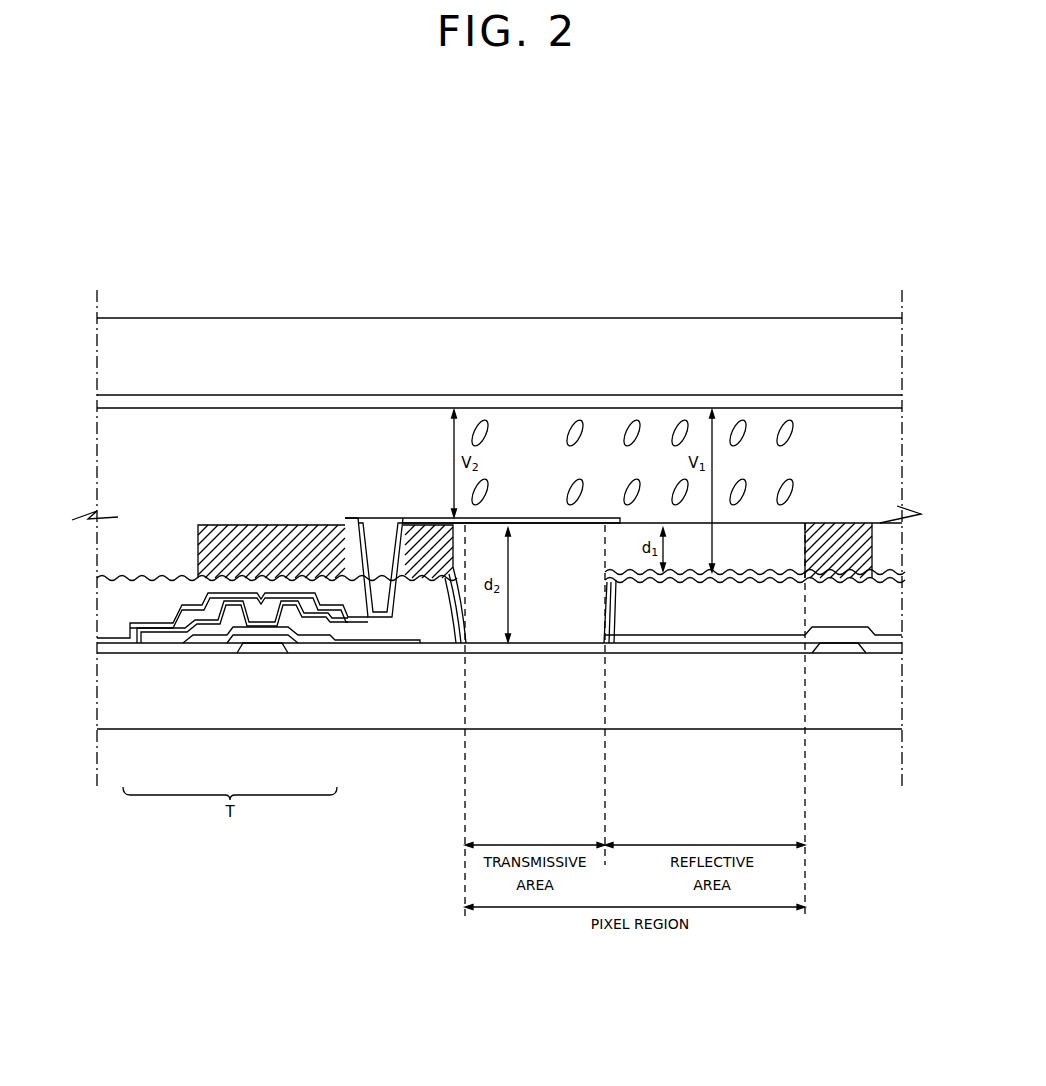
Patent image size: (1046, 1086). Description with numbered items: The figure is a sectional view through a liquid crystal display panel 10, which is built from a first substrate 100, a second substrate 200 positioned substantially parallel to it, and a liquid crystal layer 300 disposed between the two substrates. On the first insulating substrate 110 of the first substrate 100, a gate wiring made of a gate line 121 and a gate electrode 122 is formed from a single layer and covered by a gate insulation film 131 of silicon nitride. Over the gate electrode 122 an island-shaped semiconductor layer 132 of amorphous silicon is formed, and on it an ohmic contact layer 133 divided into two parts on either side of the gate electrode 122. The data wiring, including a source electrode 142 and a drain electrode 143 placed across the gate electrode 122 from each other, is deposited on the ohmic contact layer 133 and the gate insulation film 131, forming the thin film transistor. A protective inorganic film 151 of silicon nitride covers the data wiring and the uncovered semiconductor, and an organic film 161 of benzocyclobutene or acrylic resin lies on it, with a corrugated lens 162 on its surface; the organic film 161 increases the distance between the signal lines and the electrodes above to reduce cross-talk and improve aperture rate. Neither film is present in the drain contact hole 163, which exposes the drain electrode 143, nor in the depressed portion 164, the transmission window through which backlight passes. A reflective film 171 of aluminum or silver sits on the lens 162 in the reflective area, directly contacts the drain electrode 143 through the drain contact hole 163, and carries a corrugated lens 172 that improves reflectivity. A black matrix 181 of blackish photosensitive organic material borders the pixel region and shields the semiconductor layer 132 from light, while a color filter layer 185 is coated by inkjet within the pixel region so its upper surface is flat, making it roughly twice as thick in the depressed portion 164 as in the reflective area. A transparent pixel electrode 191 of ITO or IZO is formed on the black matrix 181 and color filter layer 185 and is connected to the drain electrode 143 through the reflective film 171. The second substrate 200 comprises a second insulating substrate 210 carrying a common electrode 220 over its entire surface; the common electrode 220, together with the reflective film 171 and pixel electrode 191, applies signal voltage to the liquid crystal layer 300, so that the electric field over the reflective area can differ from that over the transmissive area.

The liquid crystal display panel 10 is at (181, 222).
The first substrate 100 is at (838, 812).
The first insulating substrate 110 is at (171, 718).
The gate line 121 is at (833, 655).
The gate electrode 122 is at (265, 648).
The gate insulation film 131 is at (215, 655).
The semiconductor layer 132 is at (310, 643).
The ohmic contact layer 133 is at (327, 643).
The source electrode 142 is at (165, 650).
The drain electrode 143 is at (398, 630).
The inorganic film 151 is at (137, 650).
The organic film 161 is at (400, 643).
The corrugated lens 162 is at (385, 643).
The drain contact hole 163 is at (380, 590).
The depressed portion 164 is at (539, 605).
The reflective film 171 is at (446, 643).
The corrugated lens 172 is at (462, 600).
The black matrix 181 is at (273, 540).
The color filter layer 185 is at (578, 600).
The pixel electrode 191 is at (601, 517).
The second substrate 200 is at (721, 290).
The second insulating substrate 210 is at (313, 330).
The common electrode 220 is at (397, 407).
The liquid crystal layer 300 is at (862, 418).